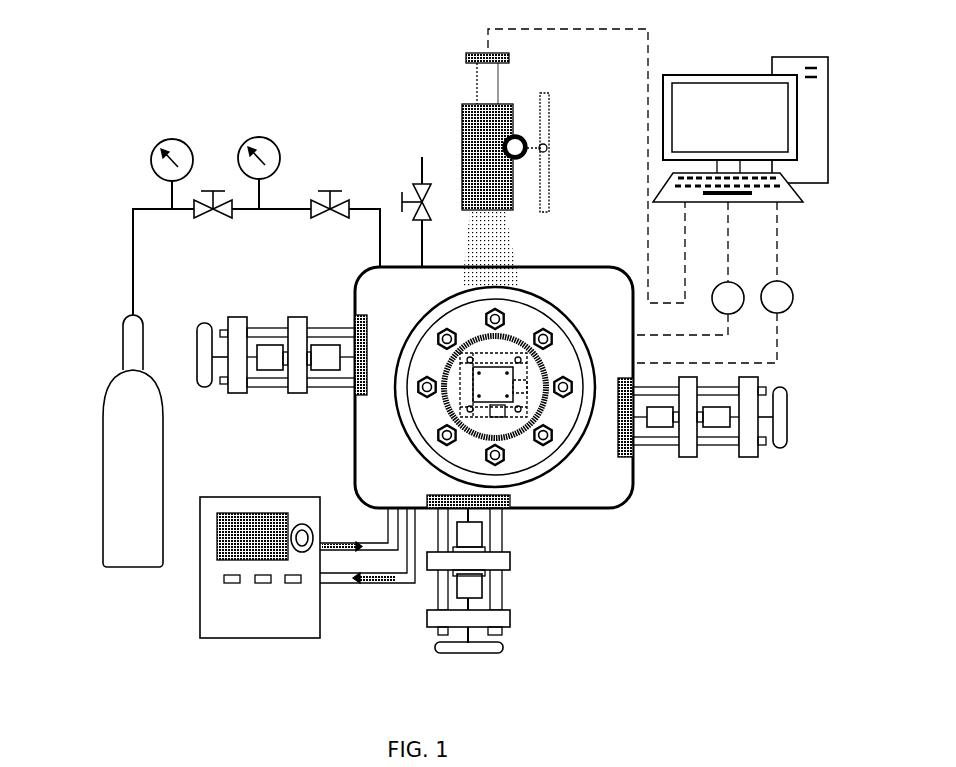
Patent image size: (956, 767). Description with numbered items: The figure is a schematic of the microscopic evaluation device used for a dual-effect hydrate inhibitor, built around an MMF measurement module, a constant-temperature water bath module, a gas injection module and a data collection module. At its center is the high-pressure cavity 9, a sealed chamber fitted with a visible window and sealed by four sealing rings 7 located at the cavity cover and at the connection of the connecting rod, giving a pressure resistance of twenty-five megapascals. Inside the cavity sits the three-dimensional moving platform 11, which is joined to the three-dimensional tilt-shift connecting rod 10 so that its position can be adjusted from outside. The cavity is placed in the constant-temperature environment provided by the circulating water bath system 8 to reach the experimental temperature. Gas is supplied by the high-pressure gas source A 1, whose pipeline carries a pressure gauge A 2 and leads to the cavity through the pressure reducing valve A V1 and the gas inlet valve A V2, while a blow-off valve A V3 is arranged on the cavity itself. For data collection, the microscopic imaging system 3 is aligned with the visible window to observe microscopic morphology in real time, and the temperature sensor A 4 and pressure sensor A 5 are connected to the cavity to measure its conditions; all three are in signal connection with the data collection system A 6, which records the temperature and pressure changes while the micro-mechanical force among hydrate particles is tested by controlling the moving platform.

The high-pressure gas source A 1 is at (102, 417).
The pressure gauge A 2 is at (168, 138).
The microscopic imaging system 3 is at (477, 80).
The temperature sensor A 4 is at (717, 282).
The pressure sensor A 5 is at (772, 282).
The data collection system A 6 is at (663, 135).
The sealing ring 7 is at (545, 402).
The circulating water bath system 8 is at (320, 625).
The high-pressure cavity 9 is at (444, 391).
The three-dimensional tilt-shift connecting rod 10 is at (267, 362).
The three-dimensional moving platform 11 is at (485, 378).
The pressure reducing valve A V1 is at (213, 221).
The gas inlet valve A V2 is at (330, 221).
The blow-off valve A V3 is at (409, 217).